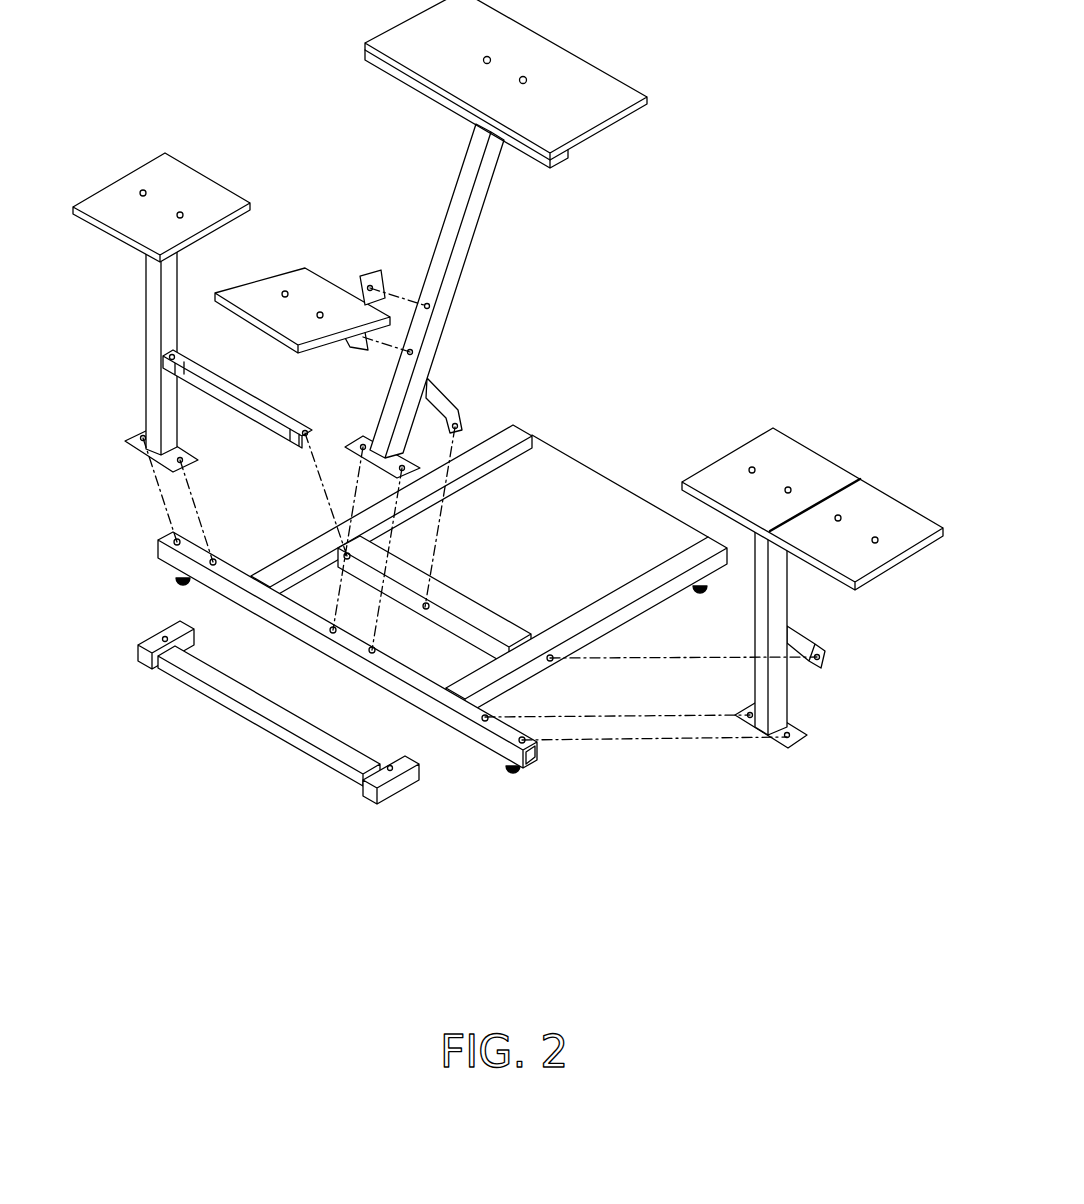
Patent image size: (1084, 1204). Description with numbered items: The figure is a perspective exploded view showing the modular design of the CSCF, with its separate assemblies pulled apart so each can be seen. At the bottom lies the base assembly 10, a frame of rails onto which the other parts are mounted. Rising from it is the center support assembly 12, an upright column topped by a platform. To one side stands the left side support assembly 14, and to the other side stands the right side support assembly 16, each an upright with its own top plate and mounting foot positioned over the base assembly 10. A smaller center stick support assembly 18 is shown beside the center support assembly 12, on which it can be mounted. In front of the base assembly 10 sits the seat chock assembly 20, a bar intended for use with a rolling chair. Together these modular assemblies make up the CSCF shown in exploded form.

The base assembly 10 is at (473, 738).
The center support assembly 12 is at (465, 247).
The left side support assembly 14 is at (153, 341).
The right side support assembly 16 is at (782, 713).
The center stick support assembly 18 is at (372, 280).
The seat chock assembly 20 is at (282, 738).